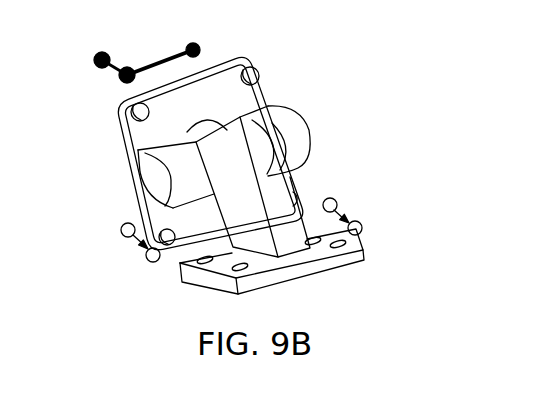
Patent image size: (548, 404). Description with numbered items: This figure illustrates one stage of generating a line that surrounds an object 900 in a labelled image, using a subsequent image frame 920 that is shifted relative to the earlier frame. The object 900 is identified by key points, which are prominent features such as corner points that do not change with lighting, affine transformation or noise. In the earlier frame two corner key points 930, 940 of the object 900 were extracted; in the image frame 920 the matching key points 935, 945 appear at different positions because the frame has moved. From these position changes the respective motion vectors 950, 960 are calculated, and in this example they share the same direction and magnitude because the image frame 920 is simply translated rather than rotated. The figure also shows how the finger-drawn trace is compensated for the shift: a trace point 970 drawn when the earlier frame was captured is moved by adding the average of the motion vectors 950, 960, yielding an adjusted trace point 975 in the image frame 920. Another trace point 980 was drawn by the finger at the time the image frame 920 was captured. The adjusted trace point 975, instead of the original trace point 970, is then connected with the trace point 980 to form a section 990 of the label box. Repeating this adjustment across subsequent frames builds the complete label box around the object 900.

The object 900 is at (265, 68).
The image frame 920 is at (344, 88).
The key point 930 is at (124, 224).
The matching key point 935 is at (150, 262).
The key point 940 is at (333, 198).
The matching key point 945 is at (362, 229).
The motion vector 950 is at (140, 246).
The motion vector 960 is at (346, 217).
The trace point 970 is at (100, 56).
The adjusted trace point 975 is at (121, 80).
The trace point 980 is at (197, 45).
The section of the label box 990 is at (162, 58).